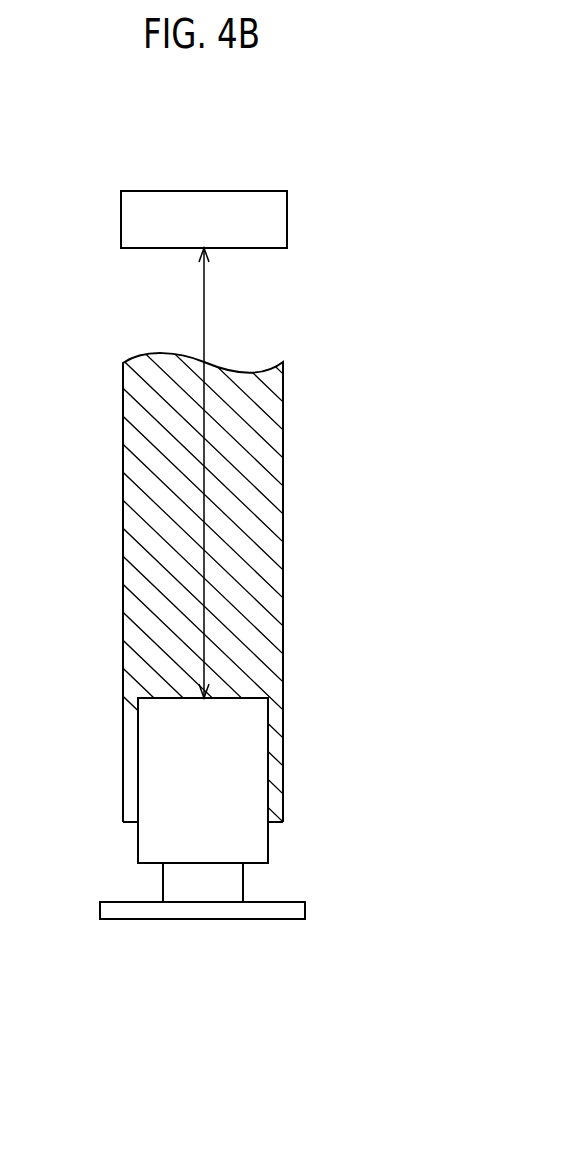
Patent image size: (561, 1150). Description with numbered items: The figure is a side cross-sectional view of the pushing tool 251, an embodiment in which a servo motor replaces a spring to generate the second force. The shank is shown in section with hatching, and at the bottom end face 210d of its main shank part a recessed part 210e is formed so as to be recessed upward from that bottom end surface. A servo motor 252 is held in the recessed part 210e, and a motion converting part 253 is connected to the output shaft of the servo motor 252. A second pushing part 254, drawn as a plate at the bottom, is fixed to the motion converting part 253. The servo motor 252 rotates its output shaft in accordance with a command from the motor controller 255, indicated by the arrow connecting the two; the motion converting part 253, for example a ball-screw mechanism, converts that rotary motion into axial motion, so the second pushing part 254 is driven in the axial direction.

The pushing tool 251 is at (350, 110).
The motor controller 255 is at (287, 227).
The bottom end face 210d is at (134, 823).
The recessed part 210e is at (268, 713).
The servo motor 252 is at (222, 772).
The motion converting part 253 is at (222, 883).
The second pushing part 254 is at (249, 912).